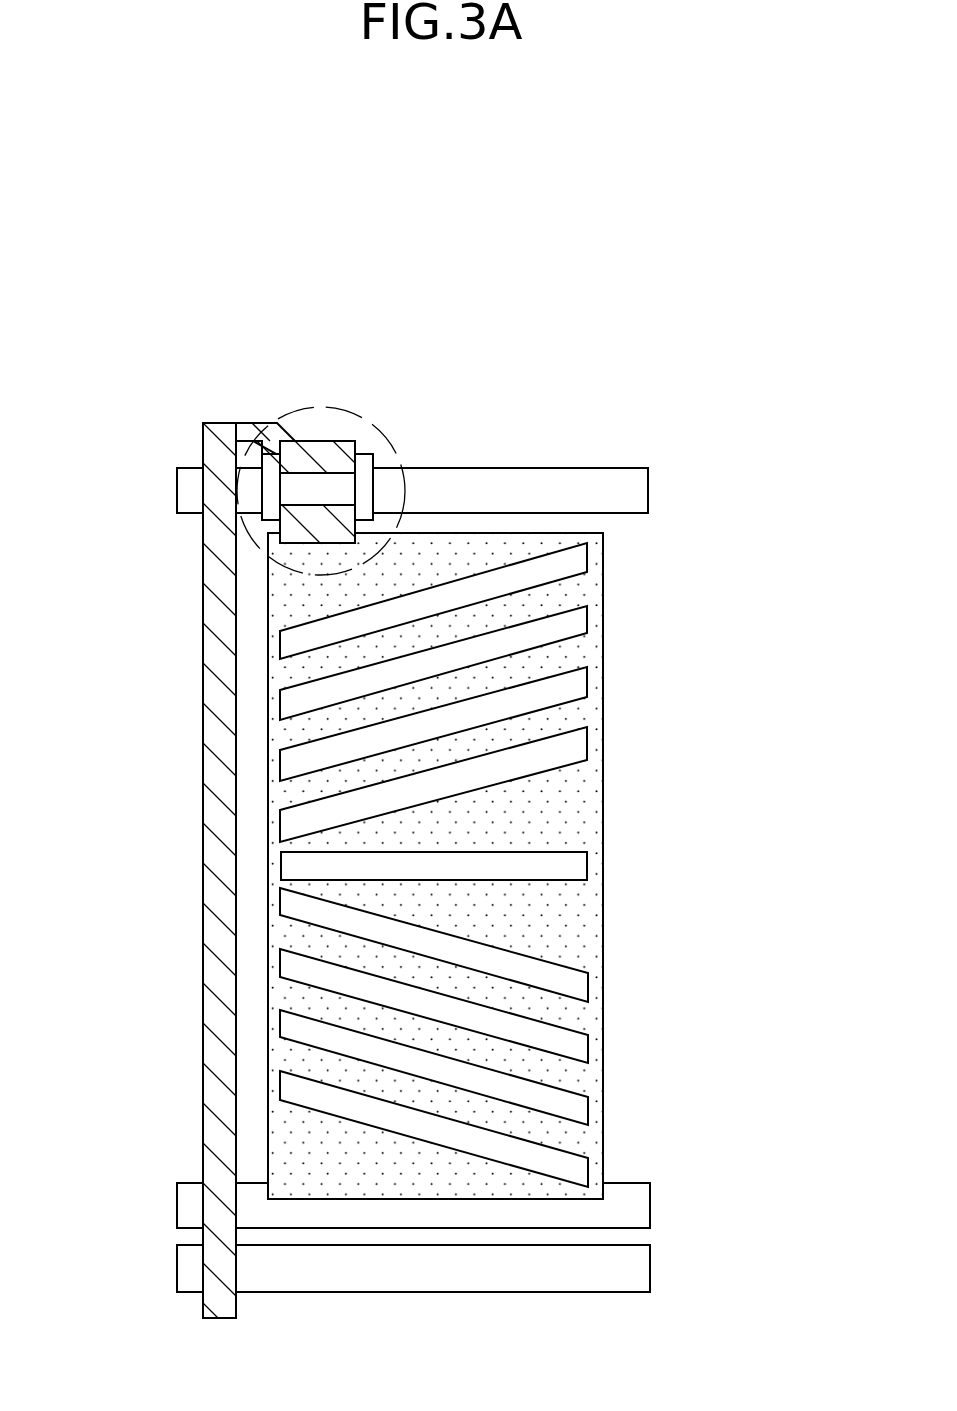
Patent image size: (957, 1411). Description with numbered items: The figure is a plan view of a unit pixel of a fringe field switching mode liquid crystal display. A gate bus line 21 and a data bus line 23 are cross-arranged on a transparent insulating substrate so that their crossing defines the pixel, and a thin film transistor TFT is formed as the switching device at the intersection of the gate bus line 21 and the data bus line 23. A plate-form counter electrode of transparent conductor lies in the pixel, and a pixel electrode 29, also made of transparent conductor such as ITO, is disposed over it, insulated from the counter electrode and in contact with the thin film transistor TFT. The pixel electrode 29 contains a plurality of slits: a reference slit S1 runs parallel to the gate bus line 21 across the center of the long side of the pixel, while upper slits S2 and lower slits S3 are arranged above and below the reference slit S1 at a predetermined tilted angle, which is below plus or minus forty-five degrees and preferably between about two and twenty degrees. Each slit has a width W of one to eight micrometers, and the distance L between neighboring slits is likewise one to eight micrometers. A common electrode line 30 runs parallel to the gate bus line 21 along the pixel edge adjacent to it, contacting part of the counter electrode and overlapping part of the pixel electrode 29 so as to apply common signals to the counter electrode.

The gate bus line 21 is at (638, 490).
The data bus line 23 is at (208, 835).
The pixel electrode 29 is at (592, 790).
The common electrode line 30 is at (643, 1202).
The reference slit S1 is at (585, 863).
The upper slits S2 is at (577, 562).
The lower slits S3 is at (582, 988).
The thin film transistor TFT is at (380, 425).
The width W is at (435, 933).
The distance between slits L is at (477, 973).